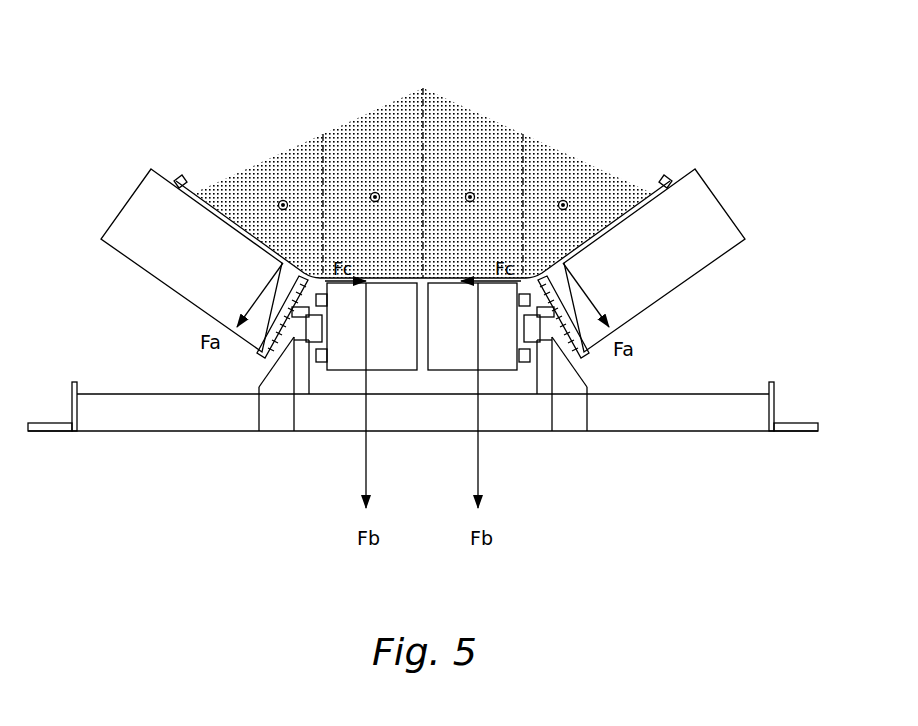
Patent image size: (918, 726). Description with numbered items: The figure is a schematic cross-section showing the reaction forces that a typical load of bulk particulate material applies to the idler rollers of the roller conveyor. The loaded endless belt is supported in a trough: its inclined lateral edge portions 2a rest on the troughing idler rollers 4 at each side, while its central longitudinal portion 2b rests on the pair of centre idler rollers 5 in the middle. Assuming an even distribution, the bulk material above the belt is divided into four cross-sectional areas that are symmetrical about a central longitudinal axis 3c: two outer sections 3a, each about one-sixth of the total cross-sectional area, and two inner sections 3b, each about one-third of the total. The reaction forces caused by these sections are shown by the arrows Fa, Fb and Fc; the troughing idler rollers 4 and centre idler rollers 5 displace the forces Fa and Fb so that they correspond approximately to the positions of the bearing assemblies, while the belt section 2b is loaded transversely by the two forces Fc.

The lateral edge portion 2a is at (192, 180).
The central longitudinal portion 2b is at (383, 280).
The outer cross-sectional area of bulk material 3a is at (272, 170).
The inner cross-sectional area of bulk material 3b is at (370, 134).
The central longitudinal axis 3c is at (424, 80).
The troughing idler roller 4 is at (137, 212).
The centre idler roller 5 is at (342, 343).